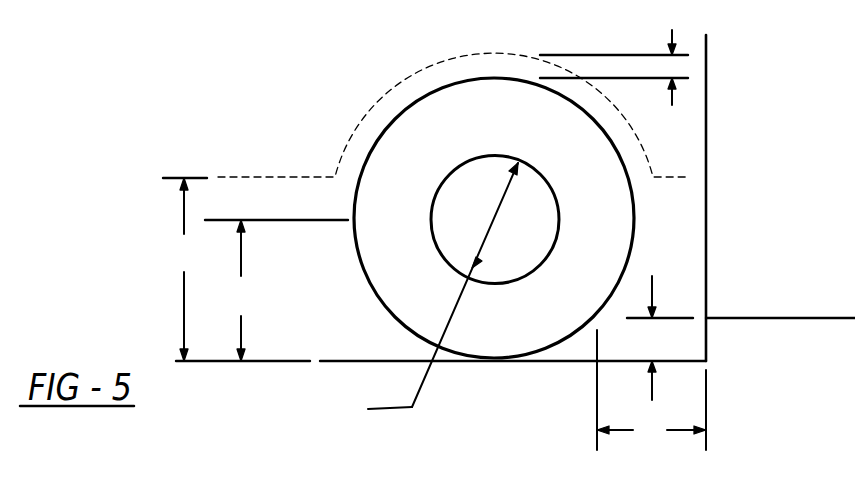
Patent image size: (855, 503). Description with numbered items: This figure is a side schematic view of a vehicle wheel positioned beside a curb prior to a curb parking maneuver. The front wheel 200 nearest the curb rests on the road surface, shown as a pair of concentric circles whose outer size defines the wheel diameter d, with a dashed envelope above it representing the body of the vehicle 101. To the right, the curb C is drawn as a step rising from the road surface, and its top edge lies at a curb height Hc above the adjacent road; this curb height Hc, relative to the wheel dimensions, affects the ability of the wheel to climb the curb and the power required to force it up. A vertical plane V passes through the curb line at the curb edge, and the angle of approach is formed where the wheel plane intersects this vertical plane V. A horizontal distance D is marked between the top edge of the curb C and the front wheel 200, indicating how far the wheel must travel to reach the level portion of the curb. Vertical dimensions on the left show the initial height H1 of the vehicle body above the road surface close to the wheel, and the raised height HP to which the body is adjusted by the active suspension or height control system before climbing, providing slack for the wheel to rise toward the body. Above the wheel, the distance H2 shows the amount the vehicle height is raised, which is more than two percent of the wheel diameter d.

The vehicle 101 is at (339, 109).
The front wheel 200 is at (442, 118).
The vertical plane V is at (707, 152).
The curb C is at (708, 318).
The vehicle height HP is at (185, 269).
The initial height H1 is at (276, 290).
The raised height distance H2 is at (614, 55).
The curb height Hc is at (660, 325).
The horizontal distance D is at (651, 390).
The wheel diameter d is at (435, 292).